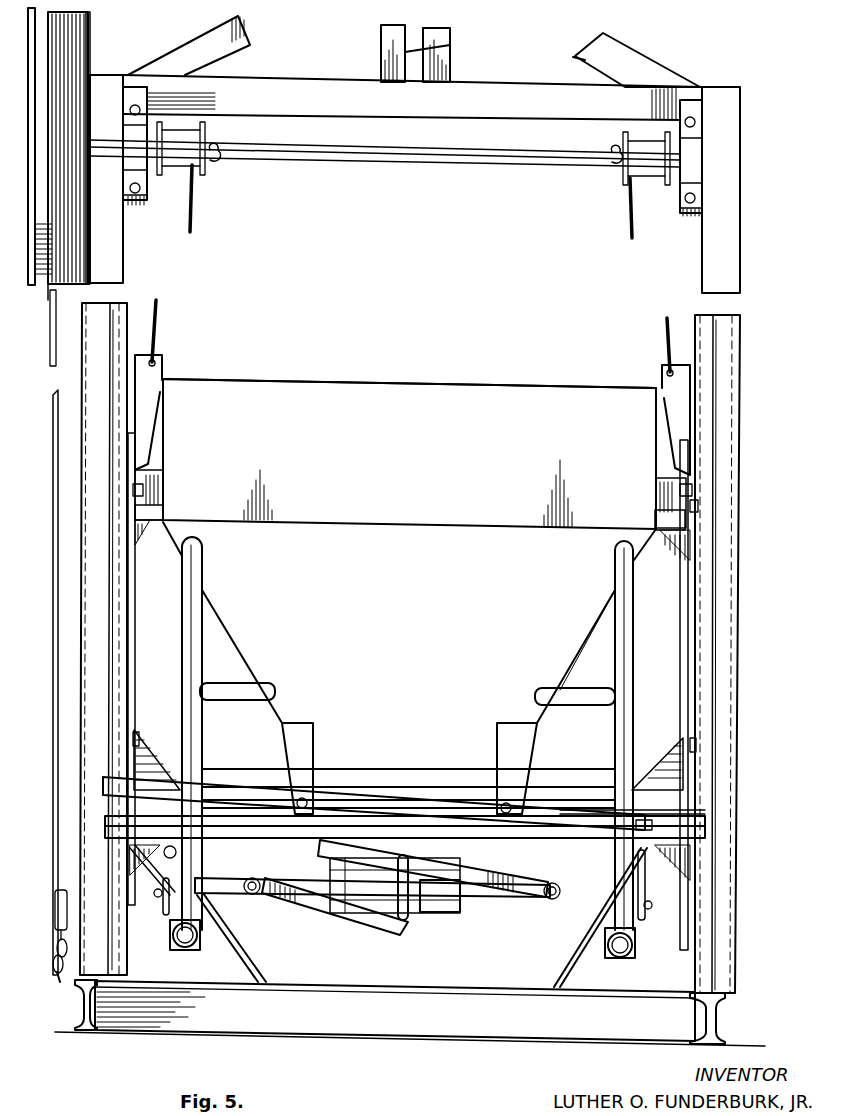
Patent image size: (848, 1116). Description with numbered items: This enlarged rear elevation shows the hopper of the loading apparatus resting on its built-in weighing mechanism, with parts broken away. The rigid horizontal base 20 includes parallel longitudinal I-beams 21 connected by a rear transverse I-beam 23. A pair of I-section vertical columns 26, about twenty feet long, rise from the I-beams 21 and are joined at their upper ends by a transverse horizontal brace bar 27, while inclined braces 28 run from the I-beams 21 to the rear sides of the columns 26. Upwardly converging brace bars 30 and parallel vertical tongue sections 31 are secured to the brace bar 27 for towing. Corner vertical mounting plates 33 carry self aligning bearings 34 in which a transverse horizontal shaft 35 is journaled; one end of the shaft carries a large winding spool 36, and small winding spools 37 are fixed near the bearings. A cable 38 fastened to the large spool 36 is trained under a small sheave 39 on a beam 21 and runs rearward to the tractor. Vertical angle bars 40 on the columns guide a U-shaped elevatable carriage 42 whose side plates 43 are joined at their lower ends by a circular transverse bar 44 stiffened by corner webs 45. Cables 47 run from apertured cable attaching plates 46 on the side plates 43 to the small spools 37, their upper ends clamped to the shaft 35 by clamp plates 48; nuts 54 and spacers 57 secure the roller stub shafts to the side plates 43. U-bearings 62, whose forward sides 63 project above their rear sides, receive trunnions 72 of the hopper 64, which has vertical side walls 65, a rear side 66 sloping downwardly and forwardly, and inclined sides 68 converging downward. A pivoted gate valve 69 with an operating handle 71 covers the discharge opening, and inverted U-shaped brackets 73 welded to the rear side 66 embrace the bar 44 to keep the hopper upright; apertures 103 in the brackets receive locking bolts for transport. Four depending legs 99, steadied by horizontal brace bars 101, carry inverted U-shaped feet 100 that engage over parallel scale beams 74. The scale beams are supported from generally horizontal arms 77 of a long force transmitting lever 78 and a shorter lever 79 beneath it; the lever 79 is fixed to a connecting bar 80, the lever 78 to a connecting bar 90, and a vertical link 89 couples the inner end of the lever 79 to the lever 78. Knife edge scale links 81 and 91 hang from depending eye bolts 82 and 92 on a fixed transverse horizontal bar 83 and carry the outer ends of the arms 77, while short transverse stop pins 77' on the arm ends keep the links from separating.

The horizontal base 20 is at (166, 1045).
The longitudinal I-beams 21 is at (90, 1005).
The rear transverse I-beam 23 is at (348, 1025).
The vertical columns 26 is at (113, 258).
The transverse horizontal brace bar 27 is at (335, 88).
The inclined braces 28 is at (90, 642).
The upwardly converging brace bars 30 is at (252, 45).
The vertical tongue sections 31 is at (450, 45).
The corner vertical mounting plates 33 is at (145, 200).
The self aligning bearings 34 is at (145, 172).
The transverse horizontal shaft 35 is at (395, 162).
The large winding spool 36 is at (90, 37).
The small winding spools 37 is at (205, 132).
The cable 38 is at (55, 556).
The small sheave 39 is at (55, 915).
The vertical angle bars 40 is at (712, 360).
The elevatable carriage 42 is at (412, 785).
The carriage side plates 43 is at (132, 648).
The horizontal transverse bar 44 is at (584, 808).
The corner webs 45 is at (152, 762).
The cable attaching plates 46 is at (158, 368).
The cables 47 is at (195, 212).
The clamp plates 48 is at (222, 162).
The nuts 54 is at (692, 490).
The spacers 57 is at (128, 492).
The U-bearings 62 is at (685, 545).
The forward sides of U-bearings 63 is at (160, 478).
The hopper 64 is at (320, 380).
The vertical side walls 65 is at (409, 454).
The rear side of hopper 66 is at (409, 622).
The inclined hopper sides 68 is at (585, 650).
The gate valve 69 is at (440, 912).
The operating handle 71 is at (330, 876).
The trunnions 72 is at (165, 508).
The inverted U-shaped brackets 73 is at (313, 735).
The scale beams 74 is at (185, 947).
The arms 77 is at (386, 888).
The stop pins 77' is at (401, 898).
The long force transmitting lever 78 is at (218, 814).
The short force transmitting lever 79 is at (325, 915).
The connecting bar 80 is at (256, 878).
The knife edge scale links 81 is at (163, 905).
The depending eye bolts 82 is at (158, 852).
The transverse horizontal bar 83 is at (523, 842).
The vertical link 89 is at (395, 912).
The connecting bar 90 is at (548, 895).
The scale links 91 is at (645, 915).
The depending eye bolts 92 is at (645, 820).
The depending vertical legs 99 is at (630, 680).
The inverted U-shaped feet 100 is at (170, 933).
The horizontal brace bars 101 is at (232, 700).
The apertures 103 is at (306, 798).